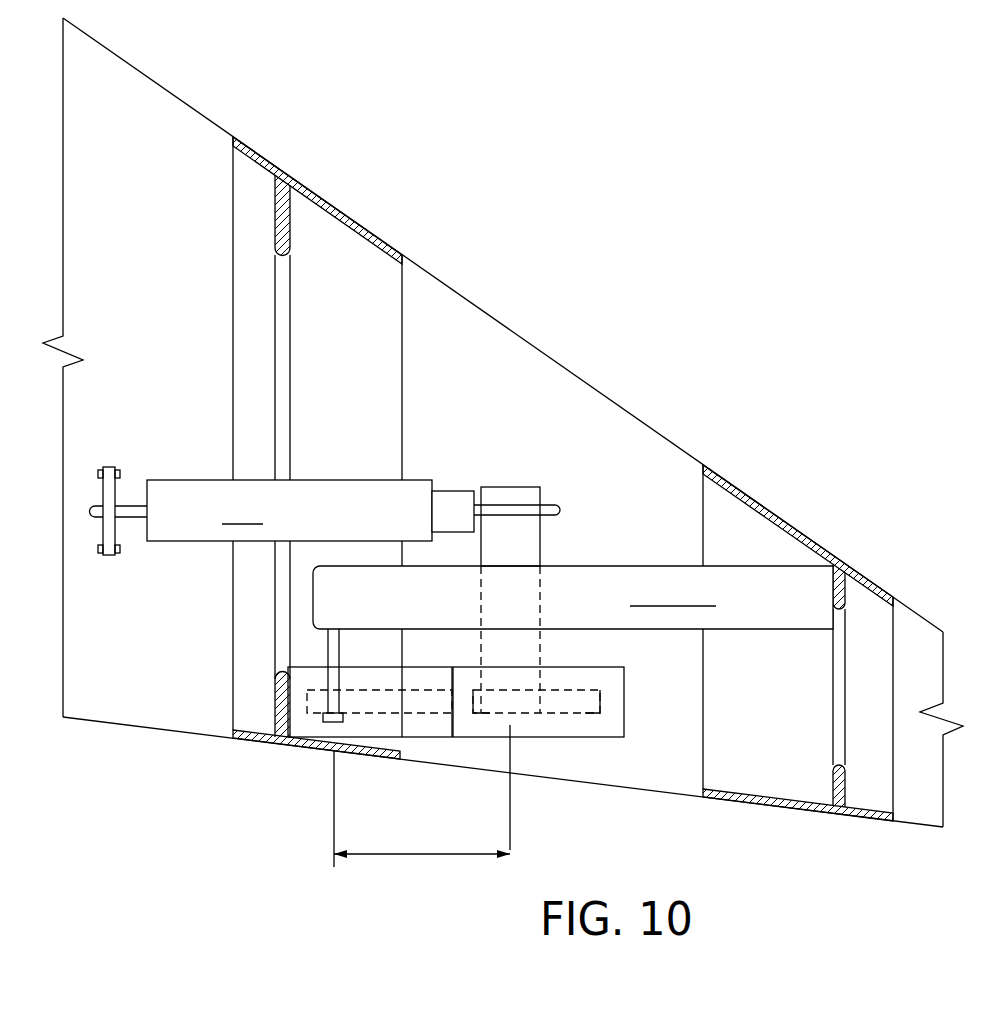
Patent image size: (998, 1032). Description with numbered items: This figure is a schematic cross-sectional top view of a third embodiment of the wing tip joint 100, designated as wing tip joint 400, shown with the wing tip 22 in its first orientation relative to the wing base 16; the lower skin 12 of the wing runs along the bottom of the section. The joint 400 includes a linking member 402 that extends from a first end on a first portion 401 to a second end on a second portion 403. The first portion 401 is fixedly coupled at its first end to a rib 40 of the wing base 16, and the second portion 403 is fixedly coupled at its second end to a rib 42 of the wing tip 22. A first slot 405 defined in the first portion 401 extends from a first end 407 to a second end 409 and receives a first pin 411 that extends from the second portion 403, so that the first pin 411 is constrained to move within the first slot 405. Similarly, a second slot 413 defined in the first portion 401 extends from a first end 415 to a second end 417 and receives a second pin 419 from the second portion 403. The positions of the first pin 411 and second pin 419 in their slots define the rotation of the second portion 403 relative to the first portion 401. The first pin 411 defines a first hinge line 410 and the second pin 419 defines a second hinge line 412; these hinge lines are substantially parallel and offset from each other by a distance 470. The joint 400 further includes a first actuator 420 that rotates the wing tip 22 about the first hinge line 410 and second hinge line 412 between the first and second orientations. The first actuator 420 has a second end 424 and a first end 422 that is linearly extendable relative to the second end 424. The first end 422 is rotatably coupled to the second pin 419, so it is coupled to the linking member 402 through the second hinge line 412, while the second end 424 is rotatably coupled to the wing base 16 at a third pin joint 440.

The lower skin 12 is at (143, 795).
The wing base 16 is at (200, 113).
The wing tip 22 is at (908, 604).
The rib 40 is at (333, 250).
The rib 42 is at (703, 484).
The wing tip joint 100 is at (505, 455).
The wing tip joint 400 is at (745, 290).
The first portion 401 is at (457, 727).
The linking member 402 is at (573, 597).
The second portion 403 is at (573, 597).
The first slot 405 is at (373, 717).
The first end 407 is at (303, 720).
The second end 409 is at (428, 683).
The first hinge line 410 is at (210, 719).
The first pin 411 is at (332, 648).
The second hinge line 412 is at (570, 639).
The second slot 413 is at (568, 715).
The first end 415 is at (482, 725).
The second end 417 is at (605, 718).
The second pin 419 is at (543, 647).
The first actuator 420 is at (310, 510).
The first end 422 is at (510, 482).
The second end 424 is at (145, 553).
The third pin joint 440 is at (102, 475).
The distance 470 is at (377, 857).